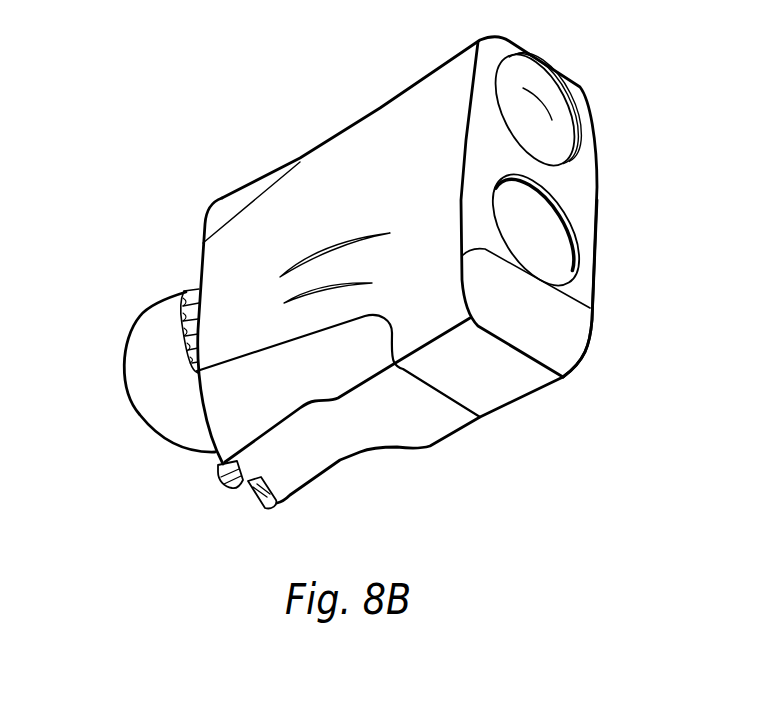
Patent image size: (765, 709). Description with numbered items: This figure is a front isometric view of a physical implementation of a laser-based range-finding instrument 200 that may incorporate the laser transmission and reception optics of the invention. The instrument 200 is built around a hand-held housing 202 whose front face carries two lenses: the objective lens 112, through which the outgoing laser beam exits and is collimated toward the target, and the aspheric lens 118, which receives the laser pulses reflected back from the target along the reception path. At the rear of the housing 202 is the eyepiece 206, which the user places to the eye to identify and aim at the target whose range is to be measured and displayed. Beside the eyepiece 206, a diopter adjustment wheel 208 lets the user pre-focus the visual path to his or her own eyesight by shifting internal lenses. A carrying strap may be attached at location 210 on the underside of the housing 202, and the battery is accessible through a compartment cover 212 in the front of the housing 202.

The range-finding instrument 200 is at (442, 521).
The hand-held housing 202 is at (386, 98).
The objective lens 112 is at (545, 137).
The aspheric lens 118 is at (543, 258).
The eyepiece 206 is at (133, 412).
The diopter adjustment wheel 208 is at (192, 291).
The carrying strap attachment location 210 is at (244, 490).
The battery compartment cover 212 is at (590, 350).